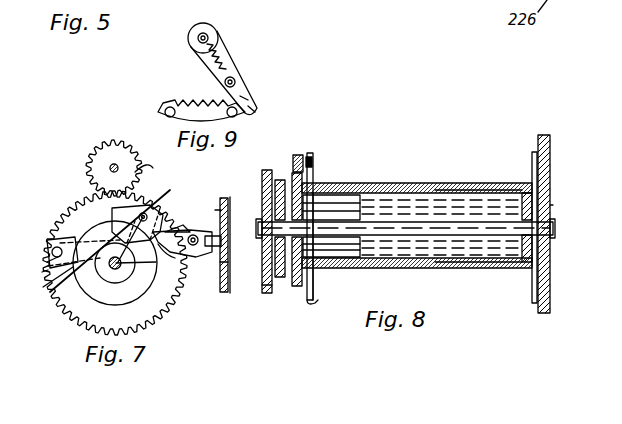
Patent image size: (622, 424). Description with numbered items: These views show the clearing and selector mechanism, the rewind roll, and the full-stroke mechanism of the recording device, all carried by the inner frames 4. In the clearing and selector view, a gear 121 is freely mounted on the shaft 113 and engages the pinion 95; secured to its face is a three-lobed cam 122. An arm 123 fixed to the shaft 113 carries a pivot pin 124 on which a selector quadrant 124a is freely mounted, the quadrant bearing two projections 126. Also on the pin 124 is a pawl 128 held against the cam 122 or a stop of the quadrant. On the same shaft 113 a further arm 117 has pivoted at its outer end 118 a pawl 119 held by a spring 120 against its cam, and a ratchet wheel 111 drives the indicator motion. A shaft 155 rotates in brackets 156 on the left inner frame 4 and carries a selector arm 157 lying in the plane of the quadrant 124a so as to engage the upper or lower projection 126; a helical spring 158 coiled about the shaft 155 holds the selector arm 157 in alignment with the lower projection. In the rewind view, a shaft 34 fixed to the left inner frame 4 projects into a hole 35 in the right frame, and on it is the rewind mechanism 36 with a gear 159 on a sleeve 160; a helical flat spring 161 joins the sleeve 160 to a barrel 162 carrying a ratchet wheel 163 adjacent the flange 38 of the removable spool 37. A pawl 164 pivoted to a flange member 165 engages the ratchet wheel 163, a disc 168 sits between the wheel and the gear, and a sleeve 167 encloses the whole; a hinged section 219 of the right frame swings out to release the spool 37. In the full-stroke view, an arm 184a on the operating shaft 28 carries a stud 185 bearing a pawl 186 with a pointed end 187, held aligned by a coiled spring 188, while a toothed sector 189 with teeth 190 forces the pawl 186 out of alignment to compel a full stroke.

In FIG. 9, the operating shaft 28 is at (215, 35).
In FIG. 9, the arm 184a is at (243, 52).
In FIG. 9, the coiled spring 188 is at (211, 52).
In FIG. 9, the stud 185 is at (236, 83).
In FIG. 9, the pawl 186 is at (244, 95).
In FIG. 9, the pointed end 187 is at (253, 110).
In FIG. 9, the toothed sector 189 is at (160, 106).
In FIG. 9, the teeth 190 is at (182, 100).
In FIG. 7, the gear 121 is at (68, 322).
In FIG. 7, the three-lobed cam 122 is at (158, 313).
In FIG. 7, the arm 123 is at (109, 277).
In FIG. 7, the pawl 128 is at (110, 207).
In FIG. 7, the spring 120 is at (68, 240).
In FIG. 7, the pivot pin 124 is at (170, 190).
In FIG. 7, the selector quadrant 124a is at (172, 212).
In FIG. 7, the pinion 95 is at (140, 170).
In FIG. 7, the outer end 118 is at (42, 250).
In FIG. 7, the pawl 119 is at (42, 266).
In FIG. 7, the ratchet wheel 111 is at (24, 280).
In FIG. 7, the arm 117 is at (48, 293).
In FIG. 7, the projections 126 is at (182, 255).
In FIG. 7, the shaft 113 is at (171, 260).
In FIG. 7, the selector arm 157 is at (176, 228).
In FIG. 7, the helical spring 158 is at (230, 224).
In FIG. 7, the shaft 155 is at (221, 210).
In FIG. 7, the brackets 156 is at (228, 262).
In FIG. 7, the inner frame 4 is at (221, 292).
In FIG. 8, the inner frame 4 is at (272, 293).
In FIG. 8, the gear 159 is at (264, 290).
In FIG. 8, the hole 35 is at (553, 235).
In FIG. 8, the barrel 162 is at (332, 190).
In FIG. 8, the helical flat spring 161 is at (357, 202).
In FIG. 8, the sleeve 160 is at (342, 245).
In FIG. 8, the rewind mechanism 36 is at (395, 205).
In FIG. 8, the shaft 34 is at (480, 230).
In FIG. 8, the sleeve 167 is at (435, 188).
In FIG. 8, the spool 37 is at (510, 185).
In FIG. 8, the flange 38 is at (313, 160).
In FIG. 8, the flange member 165 is at (313, 298).
In FIG. 8, the ratchet wheel 163 is at (306, 302).
In FIG. 8, the disc 168 is at (292, 168).
In FIG. 8, the pawl 164 is at (305, 153).
In FIG. 8, the hinged section 219 is at (552, 205).